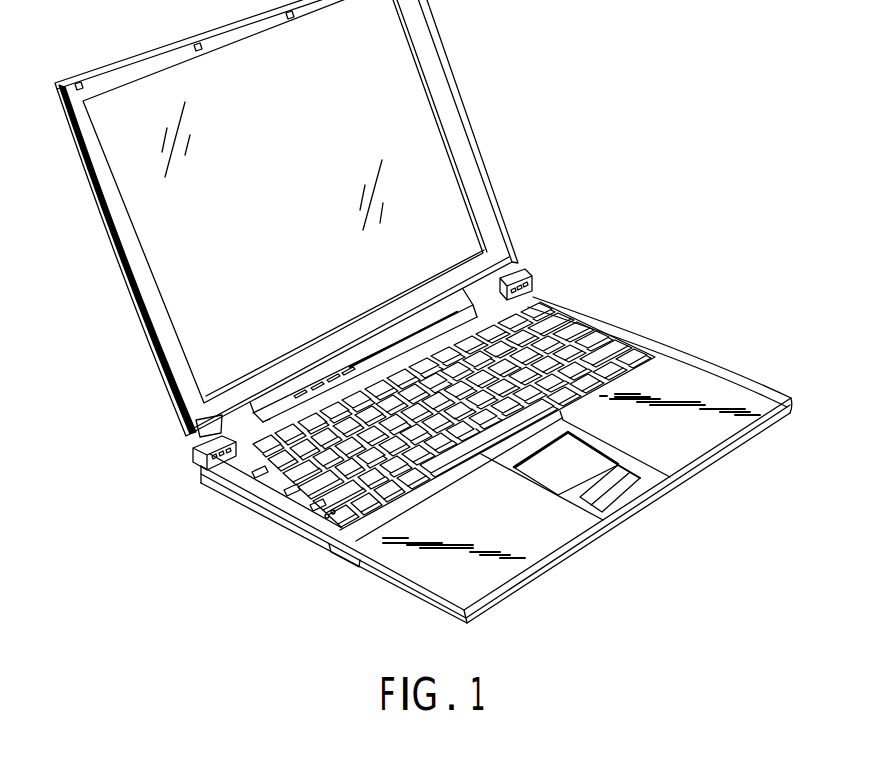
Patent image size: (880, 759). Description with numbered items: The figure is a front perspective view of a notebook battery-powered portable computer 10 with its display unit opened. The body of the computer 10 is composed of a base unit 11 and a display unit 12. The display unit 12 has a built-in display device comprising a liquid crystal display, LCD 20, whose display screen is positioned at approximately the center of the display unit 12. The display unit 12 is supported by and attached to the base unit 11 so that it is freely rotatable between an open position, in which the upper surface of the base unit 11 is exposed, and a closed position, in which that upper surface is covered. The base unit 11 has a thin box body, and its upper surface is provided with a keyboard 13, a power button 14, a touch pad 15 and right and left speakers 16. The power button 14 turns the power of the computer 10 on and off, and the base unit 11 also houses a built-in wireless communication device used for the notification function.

The computer 10 is at (562, 295).
The base unit 11 is at (690, 357).
The display unit 12 is at (447, 109).
The keyboard 13 is at (580, 323).
The power button 14 is at (249, 477).
The touch pad 15 is at (545, 470).
The right and left speakers 16 is at (530, 288).
The liquid crystal display (LCD) 20 is at (398, 66).